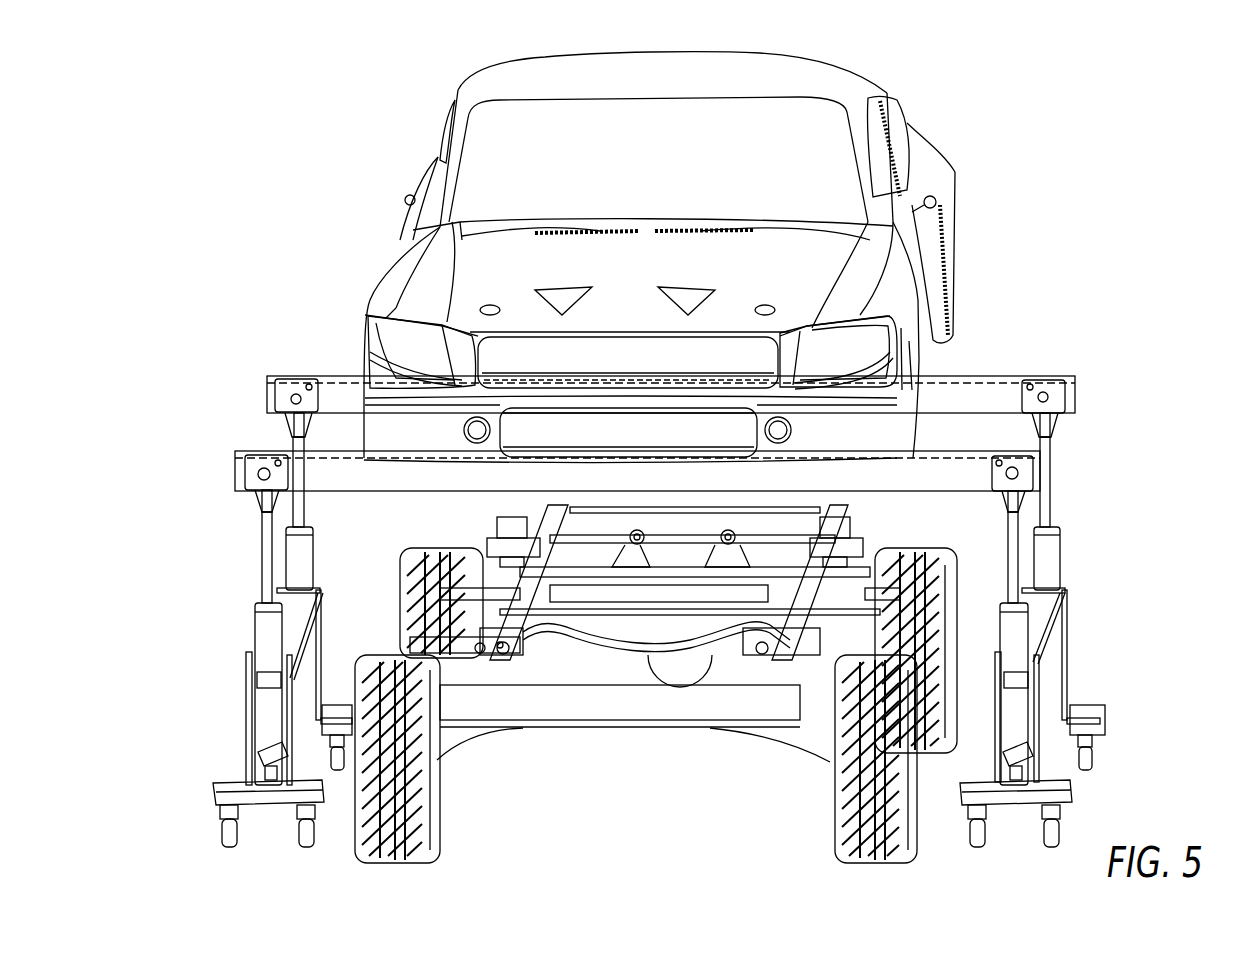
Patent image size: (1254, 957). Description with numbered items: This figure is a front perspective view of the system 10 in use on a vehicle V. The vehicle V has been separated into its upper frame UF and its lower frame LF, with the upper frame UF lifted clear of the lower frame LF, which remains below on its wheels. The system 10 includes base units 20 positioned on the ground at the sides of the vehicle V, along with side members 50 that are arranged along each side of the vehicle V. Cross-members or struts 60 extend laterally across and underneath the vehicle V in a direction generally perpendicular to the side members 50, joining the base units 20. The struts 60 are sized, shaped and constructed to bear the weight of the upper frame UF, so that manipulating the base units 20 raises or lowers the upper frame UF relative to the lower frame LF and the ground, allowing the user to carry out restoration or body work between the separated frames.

The vehicle V is at (985, 97).
The upper frame UF is at (937, 173).
The lower frame LF is at (635, 723).
The system 10 is at (1130, 330).
The base units 20 is at (228, 716).
The side members 50 is at (290, 605).
The cross-members 60 is at (982, 462).